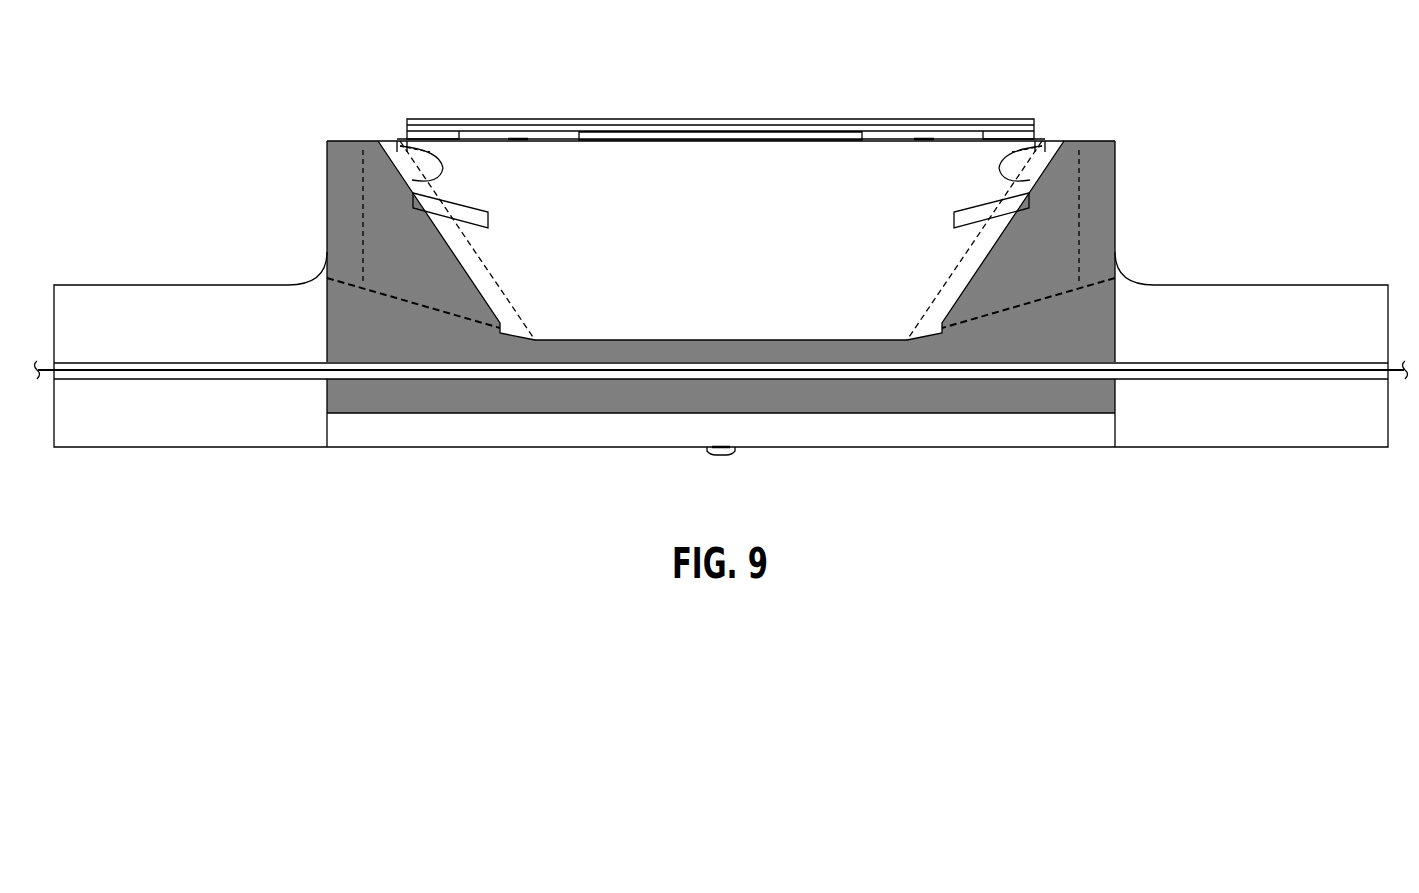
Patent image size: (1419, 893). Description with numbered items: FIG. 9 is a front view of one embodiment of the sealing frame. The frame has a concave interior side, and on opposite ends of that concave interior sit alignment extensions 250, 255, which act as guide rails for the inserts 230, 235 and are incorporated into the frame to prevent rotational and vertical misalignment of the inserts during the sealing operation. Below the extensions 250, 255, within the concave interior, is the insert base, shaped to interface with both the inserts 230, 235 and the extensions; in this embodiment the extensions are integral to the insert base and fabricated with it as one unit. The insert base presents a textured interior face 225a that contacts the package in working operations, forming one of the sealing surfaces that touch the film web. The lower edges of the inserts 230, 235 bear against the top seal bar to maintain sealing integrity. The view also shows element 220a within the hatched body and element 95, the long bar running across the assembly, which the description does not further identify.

The substrate 95 is at (1228, 372).
The first body layer 220a is at (857, 395).
The textured interior face 225a is at (1058, 340).
The insert 230 is at (327, 210).
The insert 235 is at (1115, 193).
The alignment extension 250 is at (462, 203).
The alignment extension 255 is at (980, 203).